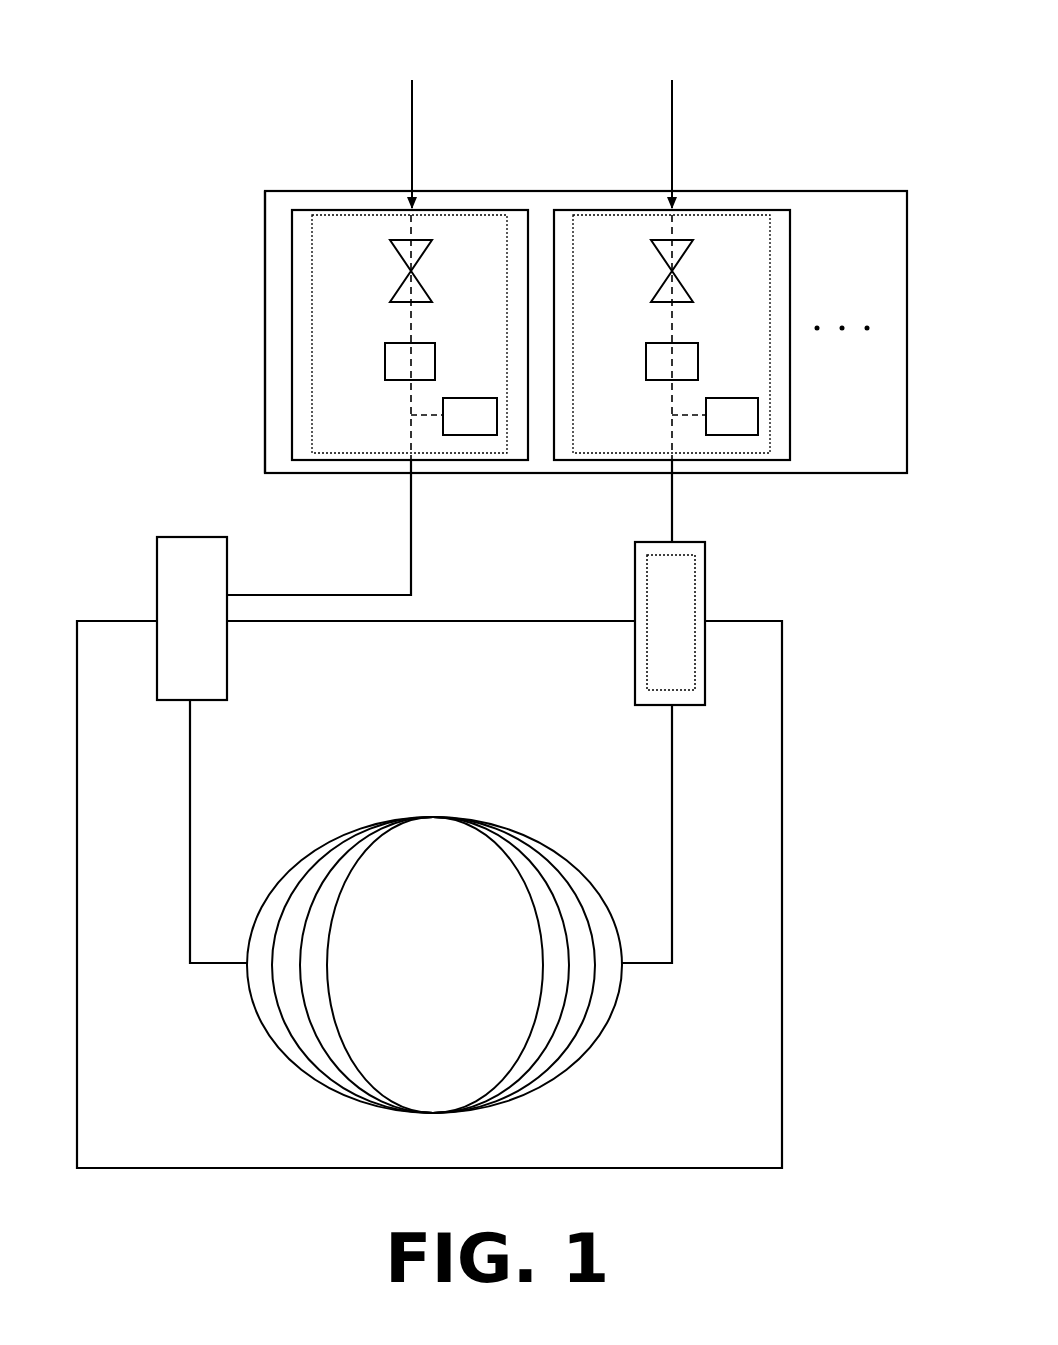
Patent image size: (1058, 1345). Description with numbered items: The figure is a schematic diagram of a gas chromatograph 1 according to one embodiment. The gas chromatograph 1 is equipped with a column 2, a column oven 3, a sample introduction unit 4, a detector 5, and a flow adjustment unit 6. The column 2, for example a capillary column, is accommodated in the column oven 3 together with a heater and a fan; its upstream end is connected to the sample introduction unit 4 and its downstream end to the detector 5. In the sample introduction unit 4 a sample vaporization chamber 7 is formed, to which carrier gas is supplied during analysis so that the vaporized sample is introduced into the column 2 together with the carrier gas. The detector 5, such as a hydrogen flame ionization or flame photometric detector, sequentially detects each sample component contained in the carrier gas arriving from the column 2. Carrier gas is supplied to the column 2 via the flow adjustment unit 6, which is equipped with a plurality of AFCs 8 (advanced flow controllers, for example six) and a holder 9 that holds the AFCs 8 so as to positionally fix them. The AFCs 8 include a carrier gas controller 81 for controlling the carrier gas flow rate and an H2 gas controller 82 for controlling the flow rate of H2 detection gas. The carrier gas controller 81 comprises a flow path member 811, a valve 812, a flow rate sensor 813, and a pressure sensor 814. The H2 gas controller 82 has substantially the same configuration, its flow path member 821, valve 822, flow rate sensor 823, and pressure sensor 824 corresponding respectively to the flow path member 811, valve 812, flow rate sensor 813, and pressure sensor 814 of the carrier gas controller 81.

The gas chromatograph 1 is at (513, 88).
The column 2 is at (433, 817).
The column oven 3 is at (782, 870).
The sample introduction unit 4 is at (633, 568).
The detector 5 is at (157, 570).
The flow adjustment unit 6 is at (882, 190).
The sample vaporization chamber 7 is at (695, 597).
The AFC 8 is at (533, 338).
The holder 9 is at (265, 358).
The carrier gas controller 81 is at (760, 210).
The H2 gas controller 82 is at (305, 210).
The flow path member 811 is at (698, 215).
The valve 812 is at (686, 248).
The flow rate sensor 813 is at (660, 343).
The pressure sensor 814 is at (735, 398).
The flow path member 821 is at (385, 215).
The valve 822 is at (423, 248).
The flow rate sensor 823 is at (397, 343).
The pressure sensor 824 is at (470, 398).